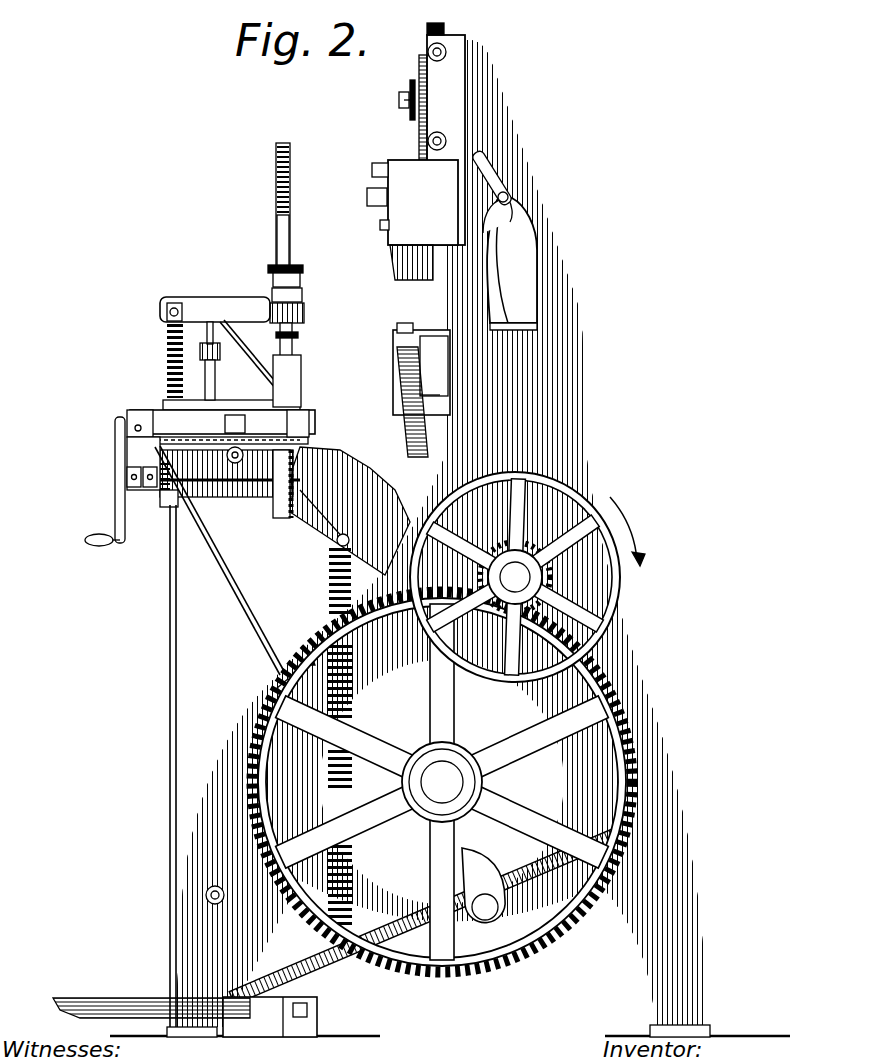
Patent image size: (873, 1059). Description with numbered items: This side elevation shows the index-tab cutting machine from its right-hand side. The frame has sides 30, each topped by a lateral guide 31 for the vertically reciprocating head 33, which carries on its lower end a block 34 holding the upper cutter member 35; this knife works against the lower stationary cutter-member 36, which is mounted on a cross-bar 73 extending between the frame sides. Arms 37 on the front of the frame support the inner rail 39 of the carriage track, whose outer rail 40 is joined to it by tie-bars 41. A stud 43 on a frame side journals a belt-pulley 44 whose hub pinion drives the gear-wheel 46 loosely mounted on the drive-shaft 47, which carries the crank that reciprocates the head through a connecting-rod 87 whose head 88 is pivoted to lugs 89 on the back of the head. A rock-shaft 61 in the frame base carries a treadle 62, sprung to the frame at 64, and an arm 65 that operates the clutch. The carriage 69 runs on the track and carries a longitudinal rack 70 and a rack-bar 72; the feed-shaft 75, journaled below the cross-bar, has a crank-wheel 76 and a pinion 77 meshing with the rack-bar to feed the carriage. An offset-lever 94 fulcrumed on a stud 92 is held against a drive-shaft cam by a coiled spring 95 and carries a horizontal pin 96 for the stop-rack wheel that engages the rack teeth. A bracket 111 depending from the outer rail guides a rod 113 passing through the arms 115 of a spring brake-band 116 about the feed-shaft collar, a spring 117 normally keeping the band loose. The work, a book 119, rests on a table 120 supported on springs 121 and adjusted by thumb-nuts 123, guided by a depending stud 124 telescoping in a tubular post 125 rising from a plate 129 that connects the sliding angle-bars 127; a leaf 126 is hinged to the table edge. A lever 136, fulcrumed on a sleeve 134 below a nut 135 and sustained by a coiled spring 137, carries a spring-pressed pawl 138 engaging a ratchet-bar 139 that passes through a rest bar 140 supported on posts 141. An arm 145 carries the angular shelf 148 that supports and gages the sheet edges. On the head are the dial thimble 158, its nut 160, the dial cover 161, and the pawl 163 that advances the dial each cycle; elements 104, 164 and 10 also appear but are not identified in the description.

The frame sides 30 is at (507, 127).
The lateral guide 31 is at (440, 70).
The vertically reciprocating head 33 is at (445, 27).
The block 34 is at (412, 202).
The upper cutter member 35 is at (388, 265).
The lower stationary cutter-member 36 is at (398, 345).
The arms 37 is at (322, 528).
The inner rail 39 is at (331, 401).
The outer rail 40 is at (148, 440).
The tie-bars 41 is at (308, 443).
The stud 43 is at (536, 721).
The belt-pulley 44 is at (607, 530).
The gear-wheel 46 is at (545, 578).
The drive-shaft 47 is at (372, 814).
The rock-shaft 61 is at (486, 907).
The treadle 62 is at (285, 975).
The frame attachment point 64 is at (332, 555).
The arm 65 is at (412, 830).
The carriage 69 is at (160, 412).
The longitudinal rack 70 is at (237, 418).
The rack-bar 72 is at (285, 420).
The cross-bar 73 is at (412, 395).
The feed-shaft 75 is at (255, 482).
The crank-wheel 76 is at (115, 546).
The pinion 77 is at (284, 512).
The connecting-rod 87 is at (500, 323).
The head 88 is at (497, 252).
The lugs 89 is at (490, 215).
The stud 92 is at (260, 623).
The offset-lever 94 is at (335, 498).
The coiled spring 95 is at (380, 715).
The horizontal pin 96 is at (235, 465).
The bracket 104 is at (140, 432).
The bracket 111 is at (157, 510).
The rod 113 is at (168, 700).
The brake-arms 115 is at (172, 507).
The spring brake-band 116 is at (163, 508).
The spring 117 is at (150, 492).
The book 119 is at (112, 985).
The table 120 is at (165, 318).
The springs 121 is at (168, 340).
The thumb-nuts 123 is at (165, 305).
The depending stud 124 is at (207, 325).
The tubular post 125 is at (232, 371).
The leaf 126 is at (255, 355).
The angle-bars 127 is at (170, 365).
The plate 129 is at (167, 378).
The sleeve 134 is at (292, 322).
The nut 135 is at (300, 268).
The lever 136 is at (318, 290).
The coiled spring 137 is at (275, 188).
The spring-pressed pawl 138 is at (268, 287).
The ratchet-bar 139 is at (278, 240).
The bar 140 is at (298, 338).
The posts 141 is at (301, 376).
The arm 145 is at (410, 420).
The angular shelf 148 is at (397, 327).
The thimble 158 is at (413, 90).
The nut 160 is at (399, 100).
The cover 161 is at (424, 128).
The pawl 163 is at (497, 185).
The latch 164 is at (492, 172).
The carriage 10 is at (218, 490).